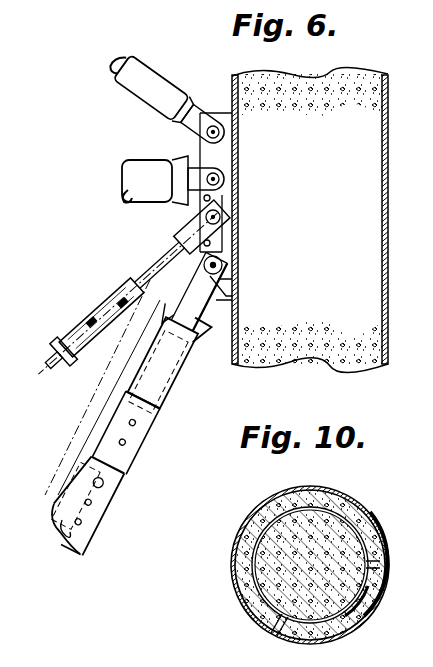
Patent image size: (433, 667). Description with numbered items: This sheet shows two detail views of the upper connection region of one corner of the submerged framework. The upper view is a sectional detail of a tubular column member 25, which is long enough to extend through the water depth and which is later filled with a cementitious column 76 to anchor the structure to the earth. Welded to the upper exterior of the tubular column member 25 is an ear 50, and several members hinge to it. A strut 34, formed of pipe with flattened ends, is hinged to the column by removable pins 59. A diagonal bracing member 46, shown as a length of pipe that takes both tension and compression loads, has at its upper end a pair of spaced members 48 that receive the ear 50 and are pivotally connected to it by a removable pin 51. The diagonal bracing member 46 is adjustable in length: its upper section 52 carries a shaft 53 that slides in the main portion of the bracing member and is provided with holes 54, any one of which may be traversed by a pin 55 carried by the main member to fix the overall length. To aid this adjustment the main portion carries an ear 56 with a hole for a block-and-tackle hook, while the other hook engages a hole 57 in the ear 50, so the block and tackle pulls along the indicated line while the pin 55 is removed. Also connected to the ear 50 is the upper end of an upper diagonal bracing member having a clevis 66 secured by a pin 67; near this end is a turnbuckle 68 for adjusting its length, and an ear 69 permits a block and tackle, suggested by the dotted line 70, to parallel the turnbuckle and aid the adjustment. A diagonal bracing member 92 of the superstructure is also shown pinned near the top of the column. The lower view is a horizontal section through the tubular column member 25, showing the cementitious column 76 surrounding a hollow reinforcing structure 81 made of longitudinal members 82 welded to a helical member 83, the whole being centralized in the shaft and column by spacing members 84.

In FIG. 6, the tubular column member 25 is at (389, 118).
In FIG. 10, the tubular column member 25 is at (314, 488).
In FIG. 6, the strut 34 is at (134, 170).
In FIG. 6, the diagonal bracing member 46 is at (92, 530).
In FIG. 6, the members 48 is at (232, 297).
In FIG. 6, the ear 50 is at (224, 153).
In FIG. 6, the removable pin 51 is at (223, 267).
In FIG. 6, the upper section 52 is at (178, 385).
In FIG. 6, the shaft 53 is at (140, 428).
In FIG. 6, the holes 54 is at (124, 444).
In FIG. 6, the pin 55 is at (104, 483).
In FIG. 6, the ear 56 is at (60, 522).
In FIG. 6, the hole 57 is at (211, 243).
In FIG. 6, the removable pins 59 is at (220, 178).
In FIG. 6, the clevis 66 is at (221, 220).
In FIG. 6, the pin 67 is at (210, 199).
In FIG. 6, the turnbuckle 68 is at (108, 315).
In FIG. 6, the ear 69 is at (66, 366).
In FIG. 6, the dotted line 70 is at (130, 284).
In FIG. 6, the cementitious column 76 is at (362, 203).
In FIG. 10, the cementitious column 76 is at (264, 598).
In FIG. 10, the reinforcing structure 81 is at (250, 545).
In FIG. 10, the longitudinal members 82 is at (256, 574).
In FIG. 10, the helical member 83 is at (366, 596).
In FIG. 10, the spacing members 84 is at (382, 561).
In FIG. 6, the diagonal bracing members 92 is at (165, 82).